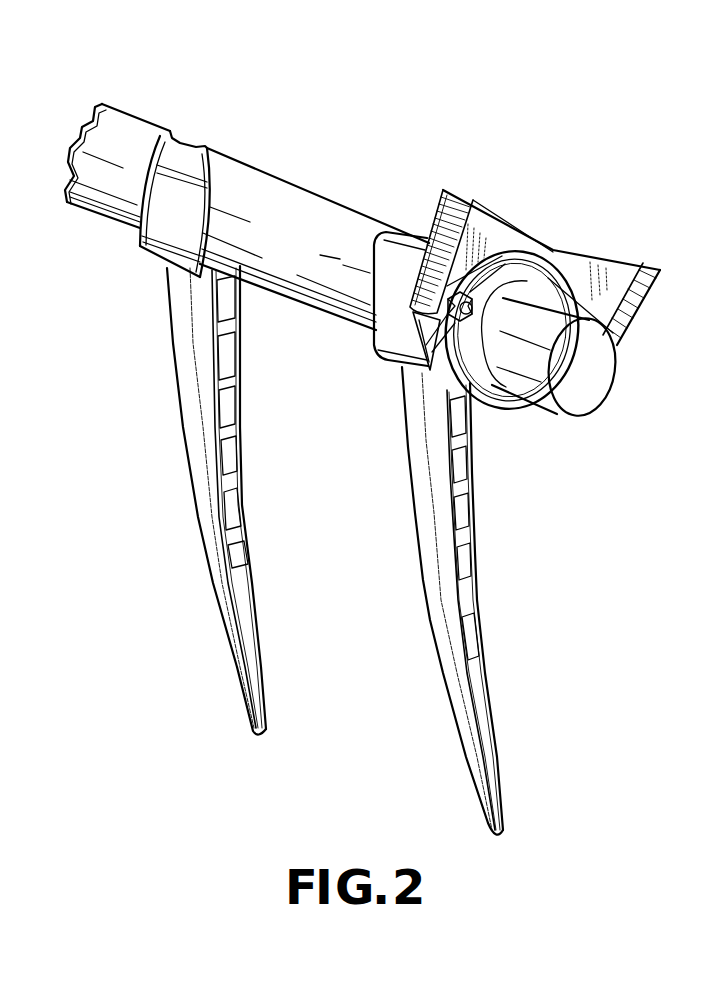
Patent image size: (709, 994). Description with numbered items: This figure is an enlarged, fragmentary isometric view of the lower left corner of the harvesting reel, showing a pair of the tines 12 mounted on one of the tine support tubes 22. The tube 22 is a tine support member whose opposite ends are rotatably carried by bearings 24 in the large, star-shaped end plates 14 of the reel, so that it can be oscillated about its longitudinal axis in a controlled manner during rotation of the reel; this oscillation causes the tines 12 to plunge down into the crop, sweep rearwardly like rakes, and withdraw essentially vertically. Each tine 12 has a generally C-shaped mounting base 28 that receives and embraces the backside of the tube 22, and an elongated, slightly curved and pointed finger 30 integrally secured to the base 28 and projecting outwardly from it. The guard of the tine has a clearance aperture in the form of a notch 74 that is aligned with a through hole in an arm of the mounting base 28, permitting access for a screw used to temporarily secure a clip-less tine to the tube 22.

The tine 12 is at (270, 615).
The plate 14 is at (593, 277).
The tube 22 is at (591, 383).
The bearing 24 is at (514, 272).
The mounting base 28 is at (247, 157).
The finger 30 is at (240, 502).
The notch 74 is at (197, 132).